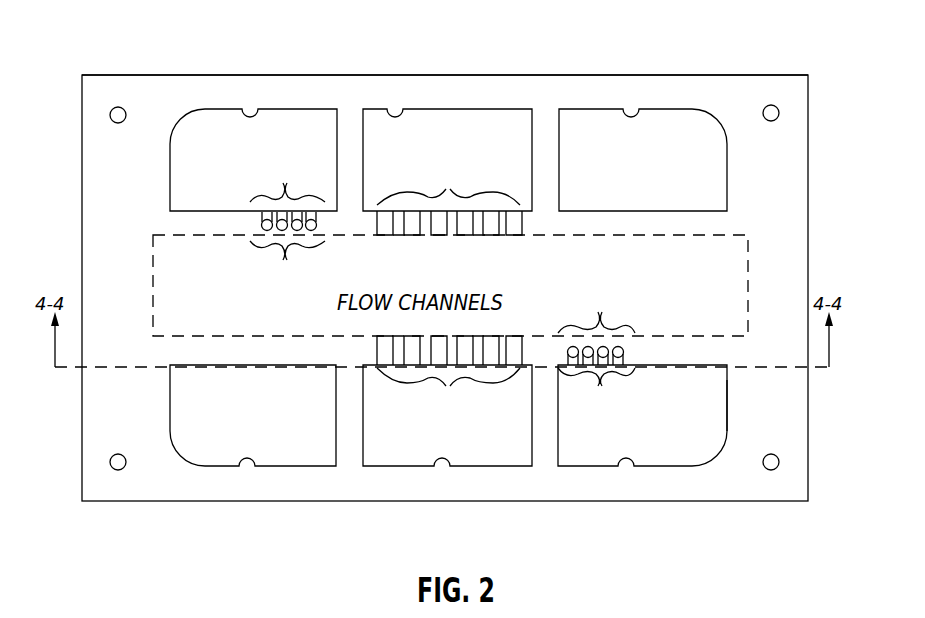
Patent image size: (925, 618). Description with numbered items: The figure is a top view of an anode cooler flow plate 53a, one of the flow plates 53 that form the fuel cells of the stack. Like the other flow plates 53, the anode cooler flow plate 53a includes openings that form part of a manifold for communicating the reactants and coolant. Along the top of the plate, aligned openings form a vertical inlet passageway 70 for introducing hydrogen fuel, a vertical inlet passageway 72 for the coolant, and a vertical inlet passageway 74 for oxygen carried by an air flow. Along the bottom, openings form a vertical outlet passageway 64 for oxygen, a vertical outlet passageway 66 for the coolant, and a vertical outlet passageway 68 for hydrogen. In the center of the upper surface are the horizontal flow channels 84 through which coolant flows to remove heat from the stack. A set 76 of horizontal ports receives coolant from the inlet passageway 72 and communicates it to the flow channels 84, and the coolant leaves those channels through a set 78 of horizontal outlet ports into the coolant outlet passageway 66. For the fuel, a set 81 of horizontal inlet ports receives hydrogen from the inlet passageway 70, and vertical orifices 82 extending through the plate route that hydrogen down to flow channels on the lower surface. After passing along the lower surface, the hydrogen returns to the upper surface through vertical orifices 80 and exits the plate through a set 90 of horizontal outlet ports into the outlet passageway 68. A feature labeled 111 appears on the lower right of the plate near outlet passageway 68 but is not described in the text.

The flow plate 53 is at (816, 134).
The anode cooler flow plate 53a is at (782, 65).
The vertical inlet passageway 70 is at (255, 116).
The vertical inlet passageway 72 is at (400, 116).
The vertical inlet passageway 74 is at (633, 116).
The set of horizontal outlet ports 76 is at (448, 190).
The vertical outlet passageway 64 is at (243, 460).
The vertical outlet passageway 66 is at (438, 457).
The vertical outlet passageway 68 is at (623, 458).
The set of horizontal outlet ports 78 is at (448, 387).
The vertical orifices 80 is at (598, 316).
The set of horizontal inlet ports 81 is at (283, 187).
The vertical orifices 82 is at (284, 258).
The horizontal flow channels 84 is at (750, 257).
The set of horizontal outlet ports 90 is at (598, 378).
The side edge of block 68 111 is at (727, 418).